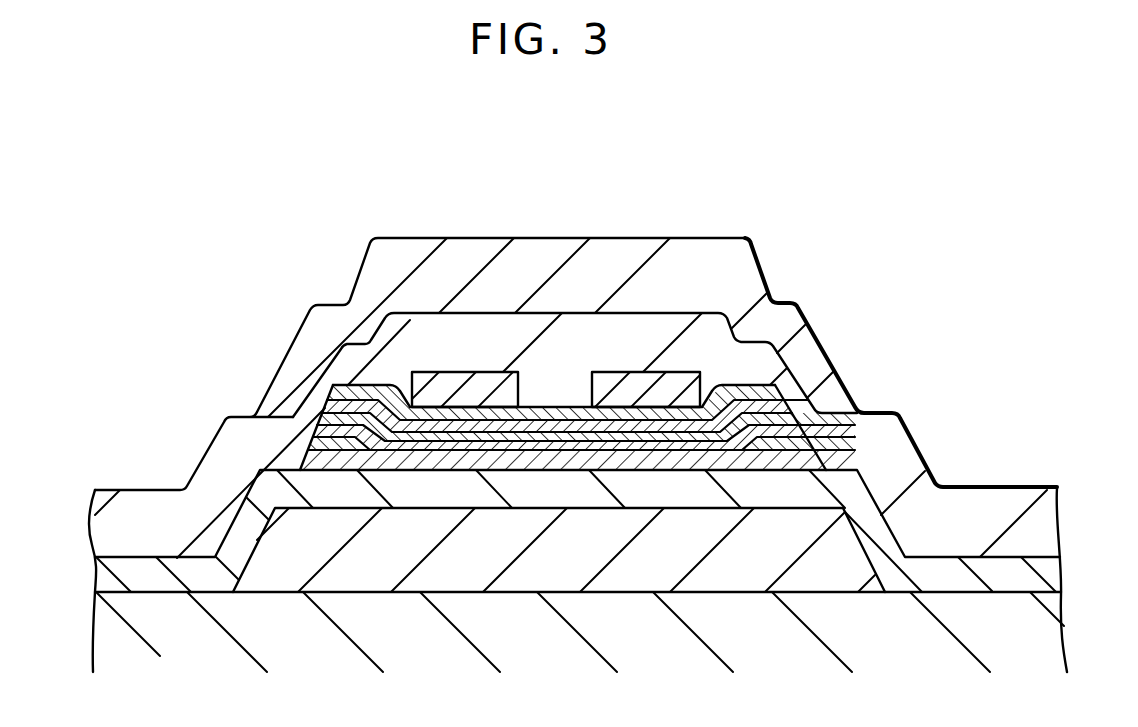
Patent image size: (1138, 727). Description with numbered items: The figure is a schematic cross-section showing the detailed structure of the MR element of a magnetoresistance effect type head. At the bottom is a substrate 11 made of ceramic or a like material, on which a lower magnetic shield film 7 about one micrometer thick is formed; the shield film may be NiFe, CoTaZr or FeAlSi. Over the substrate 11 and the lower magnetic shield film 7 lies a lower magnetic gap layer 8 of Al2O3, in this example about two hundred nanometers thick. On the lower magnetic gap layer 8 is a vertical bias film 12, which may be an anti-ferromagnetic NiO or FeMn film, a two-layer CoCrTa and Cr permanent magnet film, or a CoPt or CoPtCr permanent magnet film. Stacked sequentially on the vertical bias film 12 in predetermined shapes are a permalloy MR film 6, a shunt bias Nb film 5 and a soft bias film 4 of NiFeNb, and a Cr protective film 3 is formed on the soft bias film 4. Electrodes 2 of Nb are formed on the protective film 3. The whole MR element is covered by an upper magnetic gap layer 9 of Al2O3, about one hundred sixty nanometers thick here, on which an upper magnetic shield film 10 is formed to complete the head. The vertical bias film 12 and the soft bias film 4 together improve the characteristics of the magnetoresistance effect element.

The electrodes 2 is at (624, 385).
The Cr protective film 3 is at (780, 386).
The soft bias film 4 is at (806, 406).
The shunt bias Nb film 5 is at (812, 424).
The permalloy MR film 6 is at (818, 438).
The lower magnetic shield film 7 is at (847, 563).
The lower magnetic gap layer 8 is at (1040, 575).
The upper magnetic gap layer 9 is at (150, 512).
The upper magnetic shield film 10 is at (721, 272).
The substrate 11 is at (1037, 639).
The vertical bias film 12 is at (825, 452).